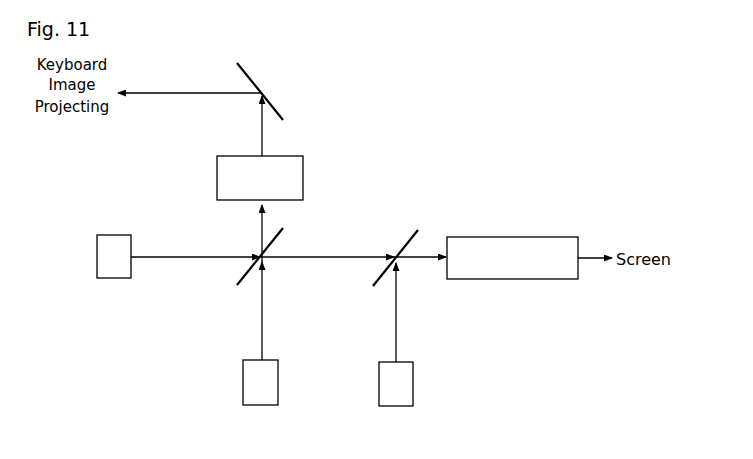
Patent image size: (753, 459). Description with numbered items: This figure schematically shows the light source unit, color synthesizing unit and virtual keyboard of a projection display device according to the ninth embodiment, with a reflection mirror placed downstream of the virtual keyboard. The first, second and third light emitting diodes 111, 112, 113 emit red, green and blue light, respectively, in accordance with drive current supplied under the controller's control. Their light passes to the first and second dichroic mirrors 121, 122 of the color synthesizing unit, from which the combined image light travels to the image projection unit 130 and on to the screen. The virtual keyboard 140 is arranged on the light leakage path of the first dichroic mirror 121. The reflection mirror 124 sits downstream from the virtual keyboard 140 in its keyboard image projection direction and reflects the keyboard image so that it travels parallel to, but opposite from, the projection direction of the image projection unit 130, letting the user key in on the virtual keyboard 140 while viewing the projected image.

The first light emitting diode 111 is at (113, 278).
The second light emitting diode 112 is at (262, 405).
The third light emitting diode 113 is at (397, 406).
The first dichroic mirror 121 is at (244, 273).
The second dichroic mirror 122 is at (378, 278).
The reflection mirror 124 is at (253, 71).
The image projection unit 130 is at (551, 245).
The virtual keyboard 140 is at (303, 178).